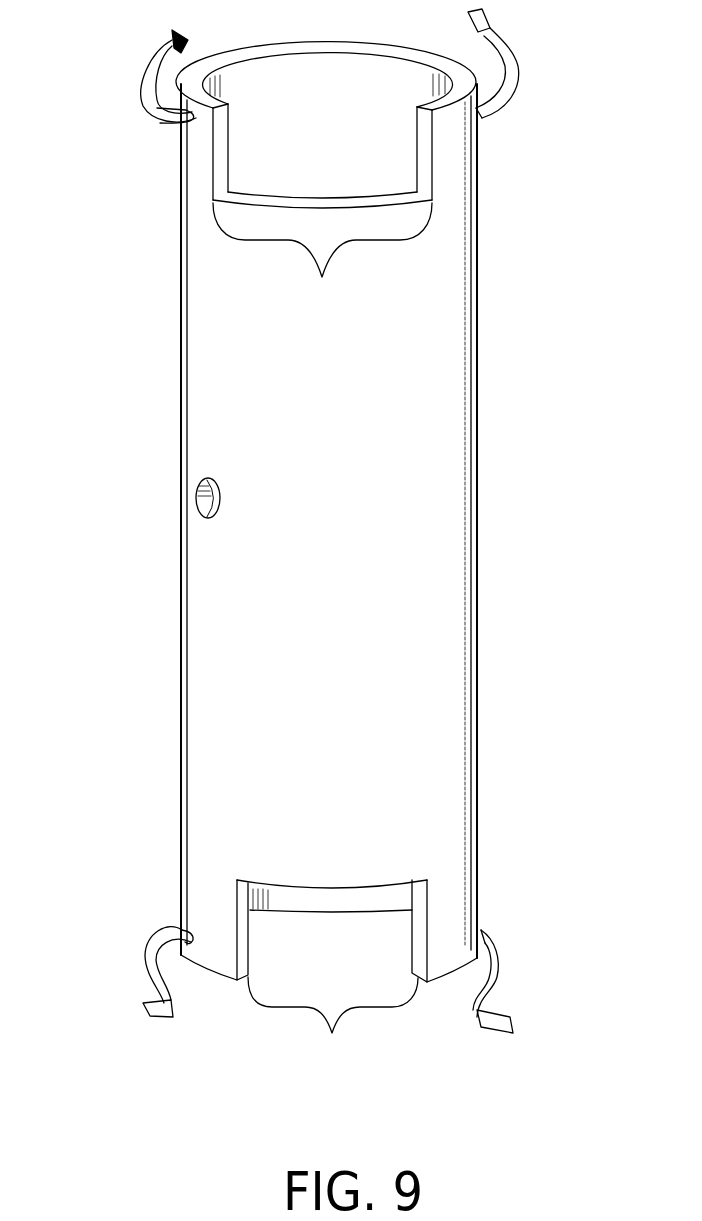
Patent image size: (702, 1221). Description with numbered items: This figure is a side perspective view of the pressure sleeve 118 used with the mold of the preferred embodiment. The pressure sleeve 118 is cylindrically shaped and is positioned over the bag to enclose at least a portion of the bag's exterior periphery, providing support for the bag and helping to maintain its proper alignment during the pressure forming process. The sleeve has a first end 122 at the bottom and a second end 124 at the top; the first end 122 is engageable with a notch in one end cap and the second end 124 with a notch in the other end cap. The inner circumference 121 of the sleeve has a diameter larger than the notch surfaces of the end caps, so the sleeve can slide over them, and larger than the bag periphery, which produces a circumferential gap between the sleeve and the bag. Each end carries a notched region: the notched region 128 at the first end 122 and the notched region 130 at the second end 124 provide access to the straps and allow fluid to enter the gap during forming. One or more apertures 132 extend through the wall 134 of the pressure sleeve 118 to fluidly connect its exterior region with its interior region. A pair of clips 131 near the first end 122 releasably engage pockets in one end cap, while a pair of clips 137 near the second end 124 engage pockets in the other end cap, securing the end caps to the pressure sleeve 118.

The pressure sleeve 118 is at (490, 455).
The inner circumference 121 is at (318, 62).
The second end 124 is at (373, 46).
The clips 137 is at (139, 77).
The notched region 130 is at (322, 207).
The wall 134 is at (192, 394).
The apertures 132 is at (221, 498).
The notched region 128 is at (332, 973).
The first end 122 is at (207, 976).
The clips 131 is at (143, 953).